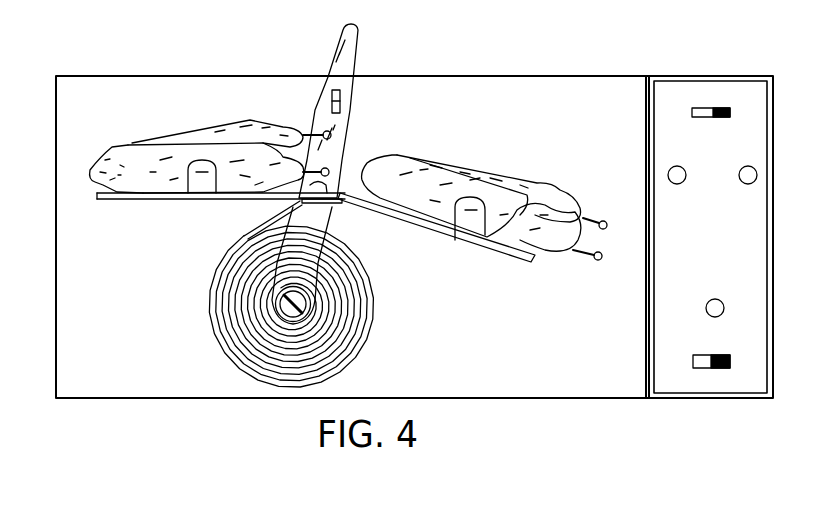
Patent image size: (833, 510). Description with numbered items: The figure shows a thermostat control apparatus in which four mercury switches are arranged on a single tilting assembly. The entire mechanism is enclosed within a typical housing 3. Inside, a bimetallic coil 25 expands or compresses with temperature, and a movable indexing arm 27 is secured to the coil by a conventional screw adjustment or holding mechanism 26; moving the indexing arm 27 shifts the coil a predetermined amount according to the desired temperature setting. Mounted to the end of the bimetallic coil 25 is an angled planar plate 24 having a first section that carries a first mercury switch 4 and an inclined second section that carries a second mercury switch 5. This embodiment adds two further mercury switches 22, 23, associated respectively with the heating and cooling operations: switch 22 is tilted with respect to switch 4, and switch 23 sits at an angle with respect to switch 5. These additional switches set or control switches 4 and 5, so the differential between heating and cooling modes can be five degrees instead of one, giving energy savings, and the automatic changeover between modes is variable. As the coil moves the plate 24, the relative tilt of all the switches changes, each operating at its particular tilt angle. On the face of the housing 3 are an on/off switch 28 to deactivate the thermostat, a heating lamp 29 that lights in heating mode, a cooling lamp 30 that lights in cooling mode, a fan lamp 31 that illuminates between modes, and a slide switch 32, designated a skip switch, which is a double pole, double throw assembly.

The housing 3 is at (587, 76).
The first mercury switch 4 is at (103, 146).
The second mercury switch 5 is at (507, 176).
The additional mercury switch 22 is at (202, 113).
The additional mercury switch 23 is at (386, 156).
The angled planar plate 24 is at (418, 225).
The bimetallic coil 25 is at (210, 267).
The screw adjustment or holding mechanism 26 is at (313, 308).
The indexing arm 27 is at (357, 48).
The on/off switch 28 is at (718, 107).
The heating lamp 29 is at (683, 169).
The cooling lamp 30 is at (759, 170).
The fan lamp 31 is at (706, 308).
The slide switch 32 is at (719, 342).